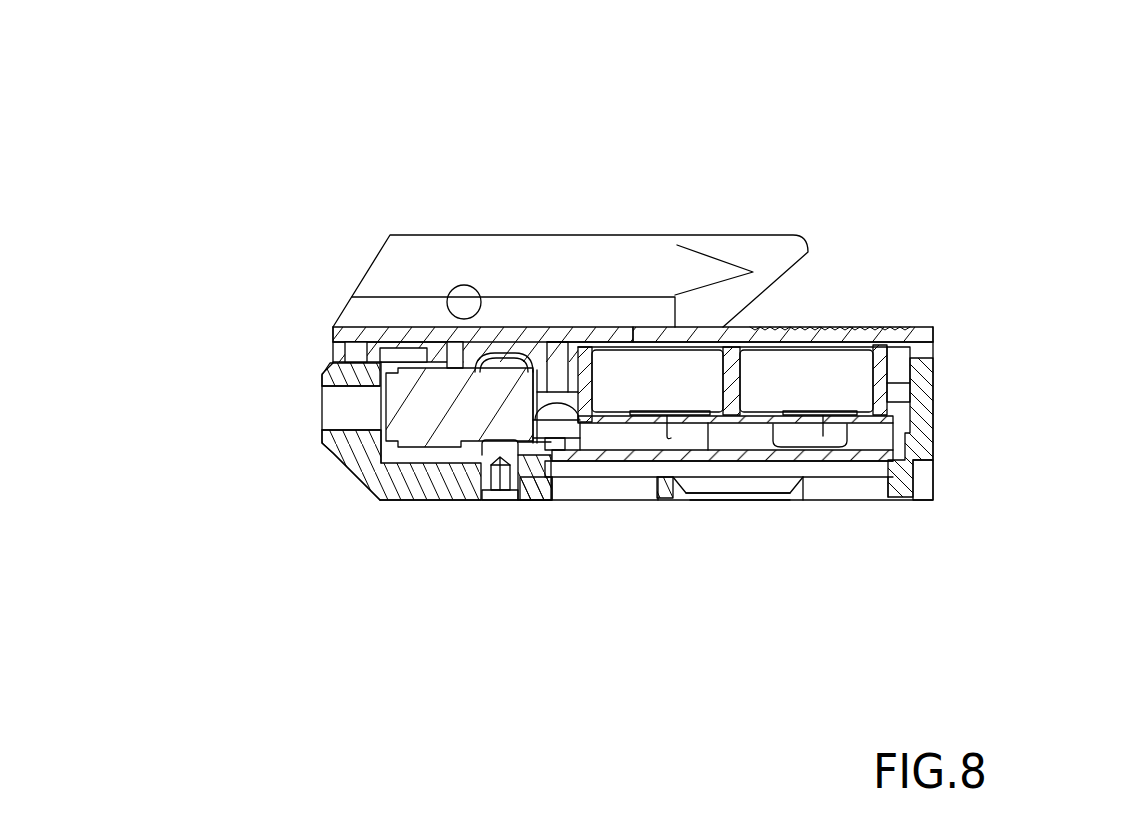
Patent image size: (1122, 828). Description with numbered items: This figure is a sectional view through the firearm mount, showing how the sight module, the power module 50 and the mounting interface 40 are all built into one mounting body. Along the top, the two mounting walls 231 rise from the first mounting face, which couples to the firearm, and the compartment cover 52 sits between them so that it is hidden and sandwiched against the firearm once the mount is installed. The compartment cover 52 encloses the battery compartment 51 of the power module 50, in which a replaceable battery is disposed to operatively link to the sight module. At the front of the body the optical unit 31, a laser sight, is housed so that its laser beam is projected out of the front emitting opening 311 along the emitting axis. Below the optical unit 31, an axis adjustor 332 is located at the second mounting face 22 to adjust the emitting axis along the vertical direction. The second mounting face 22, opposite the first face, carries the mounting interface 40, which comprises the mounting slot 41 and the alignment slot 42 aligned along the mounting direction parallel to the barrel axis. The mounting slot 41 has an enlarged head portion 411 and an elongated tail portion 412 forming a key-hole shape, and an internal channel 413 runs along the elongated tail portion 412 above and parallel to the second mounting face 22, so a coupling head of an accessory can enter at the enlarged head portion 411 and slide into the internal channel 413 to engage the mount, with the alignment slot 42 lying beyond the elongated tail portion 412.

The power module 50 is at (972, 167).
The compartment cover 52 is at (837, 327).
The battery compartment 51 is at (838, 373).
The mounting walls 231 is at (592, 267).
The optical unit 31 is at (415, 415).
The front emitting opening 311 is at (318, 410).
The second mounting face 22 is at (397, 507).
The axis adjustor 332 is at (498, 497).
The alignment slot 42 is at (602, 502).
The internal channel 413 is at (715, 473).
The elongated tail portion 412 is at (738, 503).
The enlarged head portion 411 is at (852, 503).
The mounting interface 40 is at (588, 697).
The mounting slot 41 is at (703, 680).